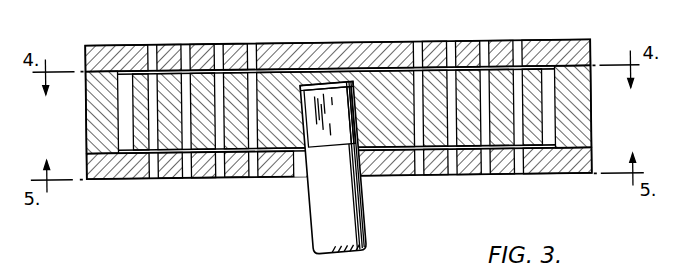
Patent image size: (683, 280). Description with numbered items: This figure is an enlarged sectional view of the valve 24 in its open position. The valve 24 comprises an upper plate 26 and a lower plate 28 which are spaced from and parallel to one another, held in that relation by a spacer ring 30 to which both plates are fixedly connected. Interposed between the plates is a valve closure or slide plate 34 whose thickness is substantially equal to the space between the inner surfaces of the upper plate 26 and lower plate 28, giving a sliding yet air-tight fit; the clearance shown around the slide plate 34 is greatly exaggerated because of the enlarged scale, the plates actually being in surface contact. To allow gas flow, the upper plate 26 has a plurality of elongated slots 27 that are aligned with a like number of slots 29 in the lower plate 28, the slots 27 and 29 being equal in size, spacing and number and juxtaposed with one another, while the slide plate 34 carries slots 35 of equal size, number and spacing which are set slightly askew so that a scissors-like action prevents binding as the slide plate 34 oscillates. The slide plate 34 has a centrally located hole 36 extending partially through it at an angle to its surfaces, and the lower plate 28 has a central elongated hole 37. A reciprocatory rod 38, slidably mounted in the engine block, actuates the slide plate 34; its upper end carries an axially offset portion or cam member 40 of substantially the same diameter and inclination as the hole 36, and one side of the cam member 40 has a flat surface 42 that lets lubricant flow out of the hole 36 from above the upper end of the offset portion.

The valve 24 is at (523, 27).
The upper plate 26 is at (128, 52).
The elongated slots 27 is at (450, 43).
The lower plate 28 is at (128, 179).
The slots 29 is at (185, 179).
The spacer ring 30 is at (584, 107).
The slide plate 34 is at (378, 78).
The slots 35 is at (519, 133).
The hole 36 is at (307, 84).
The elongated hole 37 is at (303, 170).
The reciprocatory rod 38 is at (371, 229).
The cam member 40 is at (306, 116).
The flat surface 42 is at (358, 112).